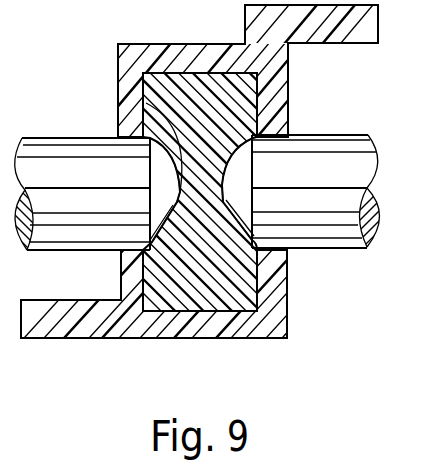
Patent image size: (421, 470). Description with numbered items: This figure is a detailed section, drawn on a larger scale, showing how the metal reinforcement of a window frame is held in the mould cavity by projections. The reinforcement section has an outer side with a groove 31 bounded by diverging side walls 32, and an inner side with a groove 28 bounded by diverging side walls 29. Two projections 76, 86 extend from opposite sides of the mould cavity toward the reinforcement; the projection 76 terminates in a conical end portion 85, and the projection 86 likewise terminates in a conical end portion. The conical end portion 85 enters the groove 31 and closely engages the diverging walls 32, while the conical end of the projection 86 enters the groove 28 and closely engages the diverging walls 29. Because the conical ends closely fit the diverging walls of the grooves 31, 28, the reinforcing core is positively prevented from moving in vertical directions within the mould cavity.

The projection 76 is at (77, 150).
The projection 86 is at (331, 136).
The conical end portion 85 is at (146, 102).
The diverging side walls 32 is at (152, 203).
The groove 28 is at (156, 224).
The diverging side walls 29 is at (233, 177).
The groove 31 is at (293, 232).